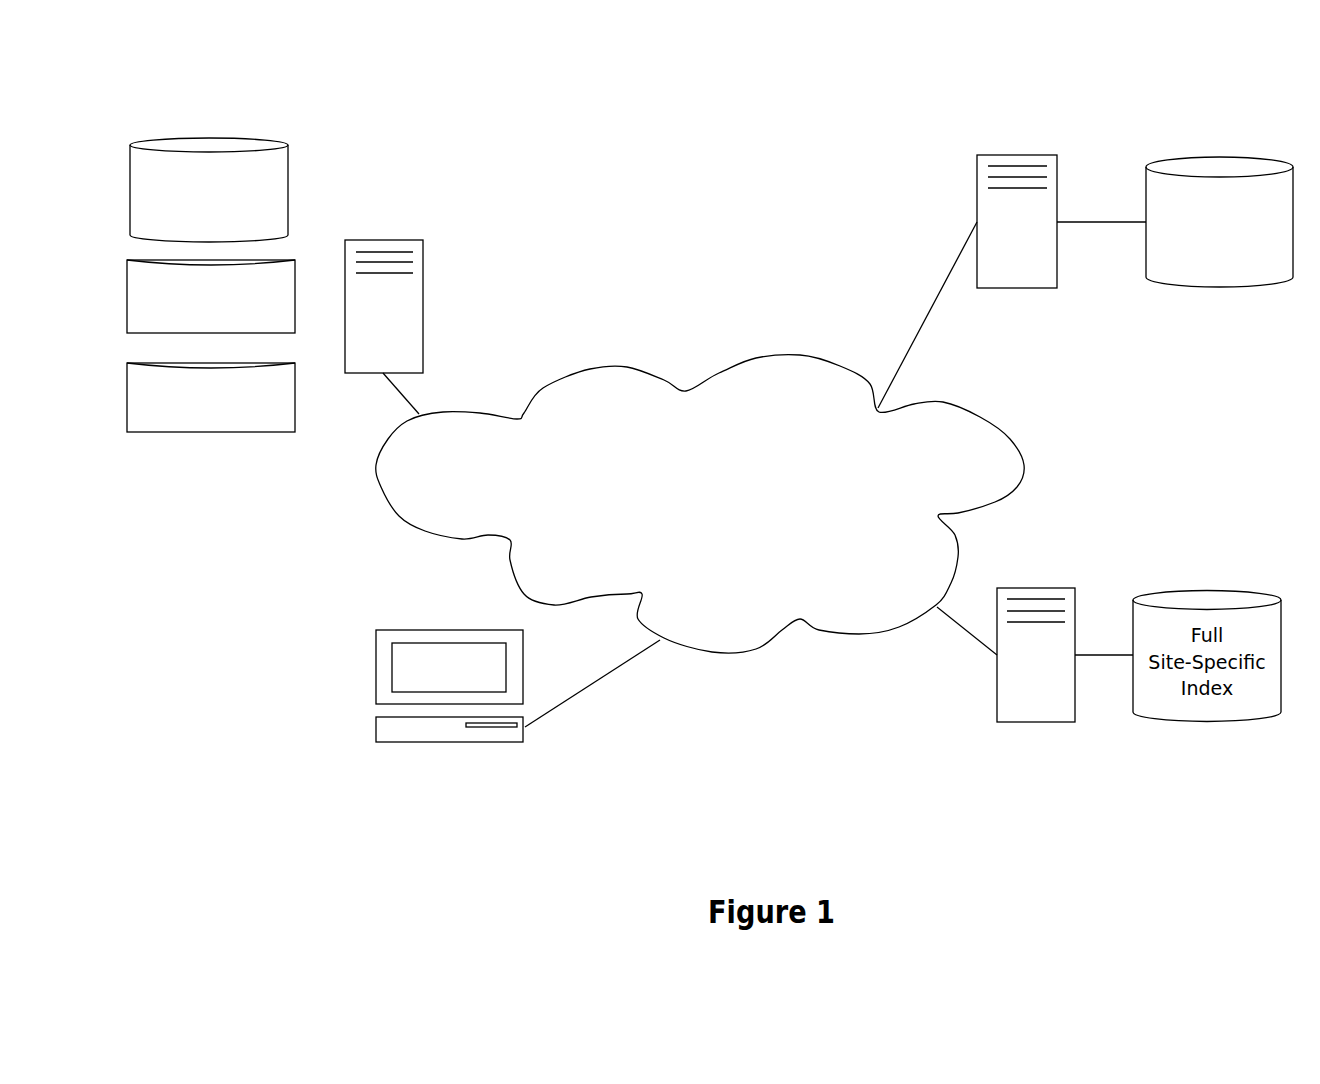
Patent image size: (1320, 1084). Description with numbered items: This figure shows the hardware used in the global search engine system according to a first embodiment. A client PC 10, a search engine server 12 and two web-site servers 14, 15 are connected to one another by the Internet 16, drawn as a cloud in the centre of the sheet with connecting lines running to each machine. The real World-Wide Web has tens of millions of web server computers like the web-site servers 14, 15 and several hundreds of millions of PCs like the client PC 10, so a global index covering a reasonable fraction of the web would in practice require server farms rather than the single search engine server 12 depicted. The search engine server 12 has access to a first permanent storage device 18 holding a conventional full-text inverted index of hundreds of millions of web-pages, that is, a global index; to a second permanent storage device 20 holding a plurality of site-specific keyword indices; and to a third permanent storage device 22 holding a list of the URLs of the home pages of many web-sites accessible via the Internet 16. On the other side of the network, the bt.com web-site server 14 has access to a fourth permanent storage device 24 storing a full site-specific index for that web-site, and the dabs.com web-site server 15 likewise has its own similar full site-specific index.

The client PC 10 is at (376, 663).
The search engine server 12 is at (407, 240).
The bt.com web-site server 14 is at (1044, 155).
The dabs.com web-site server 15 is at (1062, 588).
The Internet 16 is at (723, 648).
The first permanent storage device 18 is at (128, 178).
The second permanent storage device 20 is at (125, 295).
The third permanent storage device 22 is at (125, 403).
The fourth permanent storage device 24 is at (1250, 162).